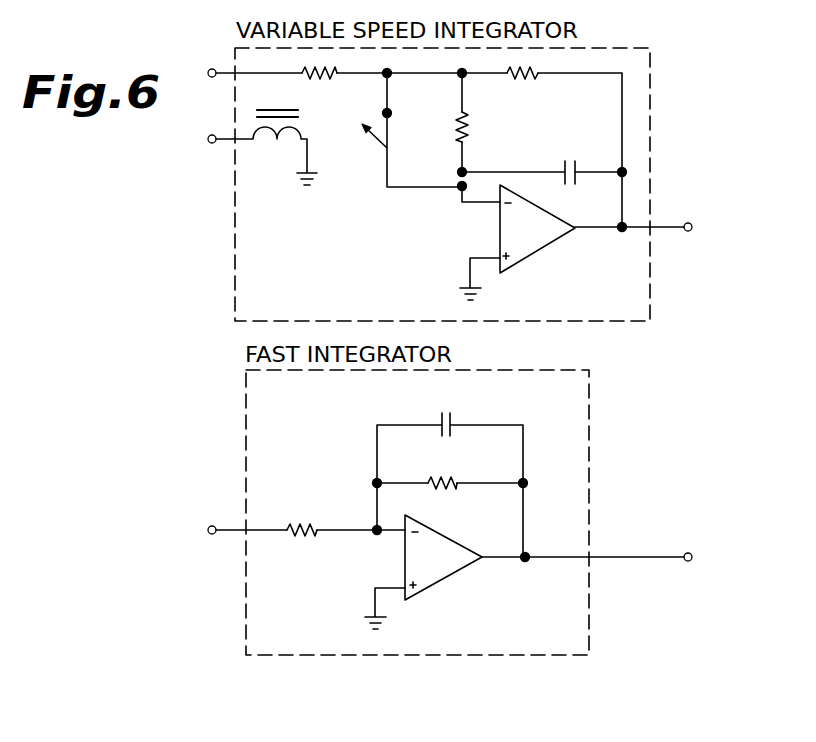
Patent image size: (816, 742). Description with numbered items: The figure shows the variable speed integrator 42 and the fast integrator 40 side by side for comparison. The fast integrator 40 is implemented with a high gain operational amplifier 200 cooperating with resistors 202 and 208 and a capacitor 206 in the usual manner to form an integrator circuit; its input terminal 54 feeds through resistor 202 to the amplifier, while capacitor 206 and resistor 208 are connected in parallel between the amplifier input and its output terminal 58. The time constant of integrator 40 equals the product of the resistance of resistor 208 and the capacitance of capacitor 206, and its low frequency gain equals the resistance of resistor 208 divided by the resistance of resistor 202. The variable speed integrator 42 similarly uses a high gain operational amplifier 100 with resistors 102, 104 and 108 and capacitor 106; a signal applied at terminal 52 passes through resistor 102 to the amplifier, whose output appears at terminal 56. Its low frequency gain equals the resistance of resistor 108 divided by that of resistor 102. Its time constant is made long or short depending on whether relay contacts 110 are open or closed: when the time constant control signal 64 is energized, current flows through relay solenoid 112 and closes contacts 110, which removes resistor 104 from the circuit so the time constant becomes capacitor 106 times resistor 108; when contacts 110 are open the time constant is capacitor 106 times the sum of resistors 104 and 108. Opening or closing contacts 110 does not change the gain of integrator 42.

The variable speed integrator 42 is at (649, 280).
The fast integrator 40 is at (589, 597).
The input terminal 52 is at (216, 78).
The time constant control signal 64 is at (216, 144).
The input terminal 54 is at (216, 535).
The output terminal 56 is at (690, 232).
The output terminal 58 is at (690, 562).
The high gain operational amplifier 100 is at (546, 239).
The resistor 102 is at (336, 76).
The resistor 104 is at (480, 112).
The capacitor 106 is at (562, 164).
The resistor 108 is at (537, 76).
The relay contacts 110 is at (395, 118).
The relay solenoid 112 is at (275, 141).
The high gain operational amplifier 200 is at (444, 568).
The resistor 202 is at (316, 533).
The capacitor 206 is at (449, 420).
The resistor 208 is at (460, 470).